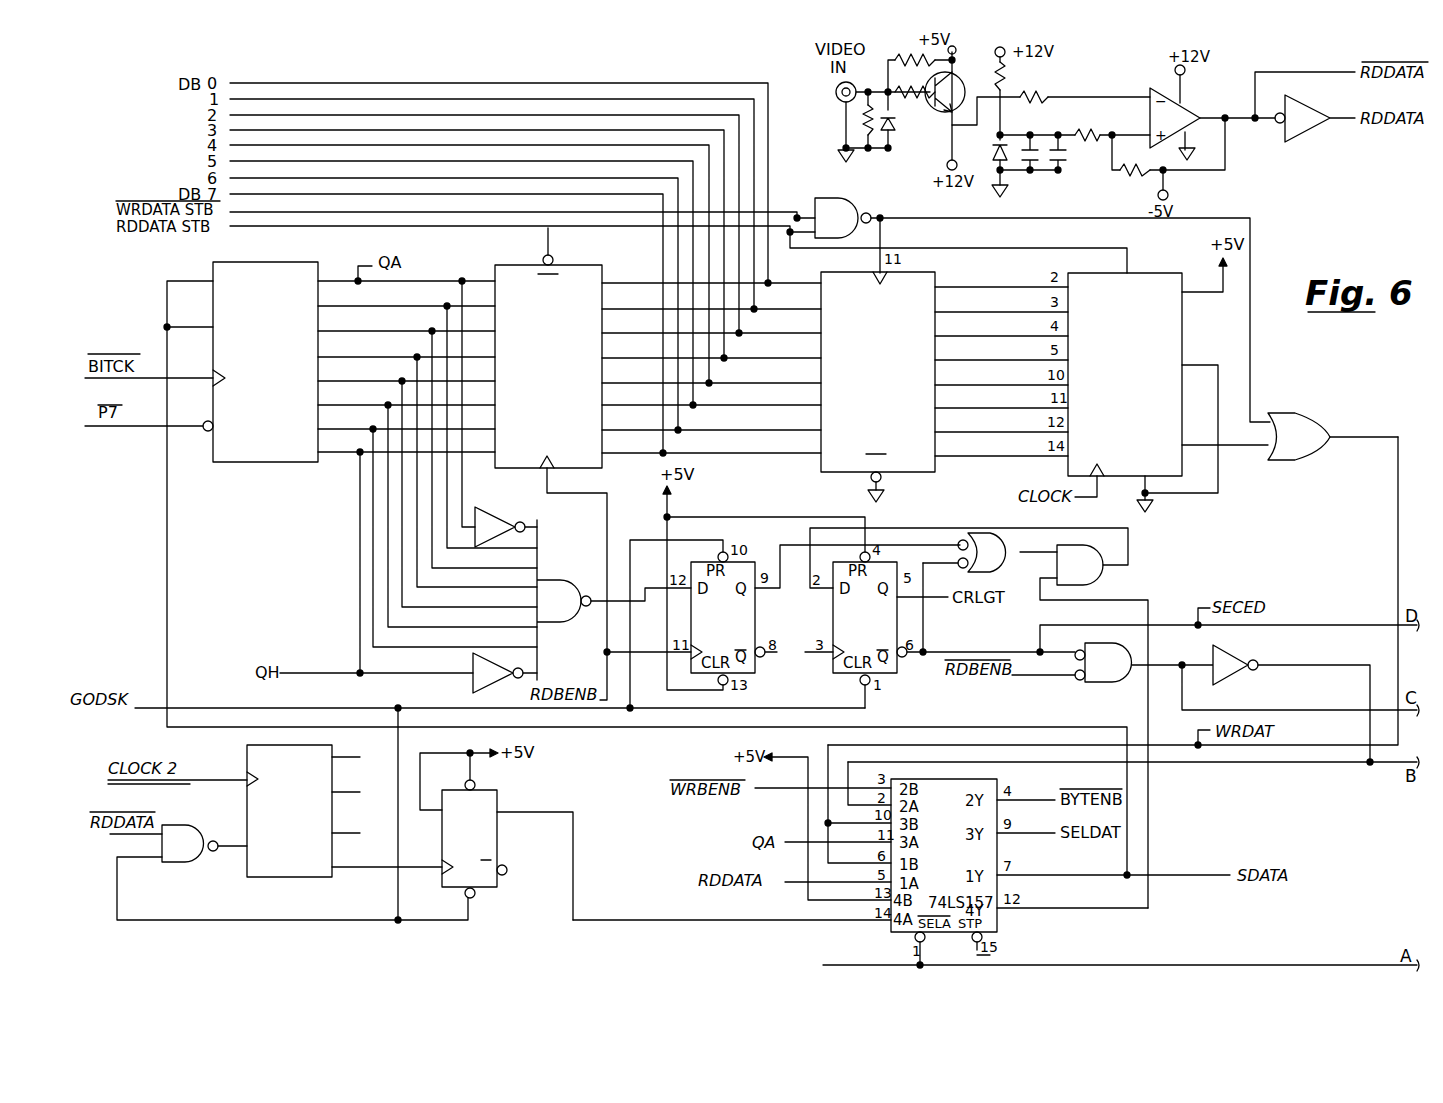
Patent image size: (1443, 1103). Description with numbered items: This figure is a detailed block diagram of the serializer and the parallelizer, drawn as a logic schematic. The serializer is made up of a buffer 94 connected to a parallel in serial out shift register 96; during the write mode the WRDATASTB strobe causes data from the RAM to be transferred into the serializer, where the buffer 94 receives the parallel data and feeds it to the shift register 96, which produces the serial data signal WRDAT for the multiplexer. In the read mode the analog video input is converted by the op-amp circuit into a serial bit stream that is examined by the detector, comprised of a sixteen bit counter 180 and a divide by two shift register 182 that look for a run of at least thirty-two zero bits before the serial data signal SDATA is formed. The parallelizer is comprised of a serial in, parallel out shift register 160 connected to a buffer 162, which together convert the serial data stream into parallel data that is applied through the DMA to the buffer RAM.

The serial in, parallel out shift register 160 is at (267, 373).
The buffer 162 is at (559, 359).
The buffer 94 is at (883, 384).
The parallel in serial out shift register 96 is at (1138, 373).
The 16 bit counter 180 is at (291, 808).
The divide by two shift register 182 is at (472, 833).